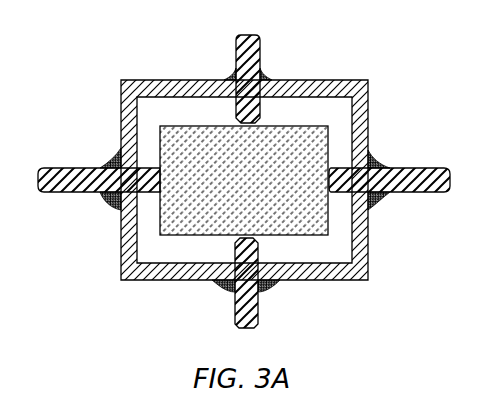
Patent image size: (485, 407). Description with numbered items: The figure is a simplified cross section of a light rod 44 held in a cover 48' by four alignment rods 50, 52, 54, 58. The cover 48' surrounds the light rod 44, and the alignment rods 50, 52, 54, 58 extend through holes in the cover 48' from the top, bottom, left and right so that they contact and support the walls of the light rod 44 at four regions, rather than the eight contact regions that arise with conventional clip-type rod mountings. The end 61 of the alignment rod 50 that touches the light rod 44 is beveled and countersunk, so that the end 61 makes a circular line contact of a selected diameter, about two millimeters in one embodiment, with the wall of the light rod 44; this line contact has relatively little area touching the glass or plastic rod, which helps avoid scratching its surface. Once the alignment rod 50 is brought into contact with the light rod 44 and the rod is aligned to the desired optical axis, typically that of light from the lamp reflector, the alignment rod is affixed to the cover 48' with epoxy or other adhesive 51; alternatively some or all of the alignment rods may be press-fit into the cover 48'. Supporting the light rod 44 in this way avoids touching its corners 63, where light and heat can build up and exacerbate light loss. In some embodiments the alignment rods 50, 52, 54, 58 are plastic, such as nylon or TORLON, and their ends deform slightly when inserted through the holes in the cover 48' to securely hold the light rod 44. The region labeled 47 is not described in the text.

The light rod 44 is at (368, 107).
The top wall of housing 47 is at (275, 82).
The cover 48' is at (286, 270).
The alignment rod 50 is at (432, 168).
The adhesive 51 is at (373, 200).
The alignment rod 52 is at (260, 50).
The alignment rod 54 is at (67, 168).
The alignment rod 58 is at (235, 305).
The end of the alignment rod 61 is at (332, 197).
The corners of the light rod 63 is at (352, 130).